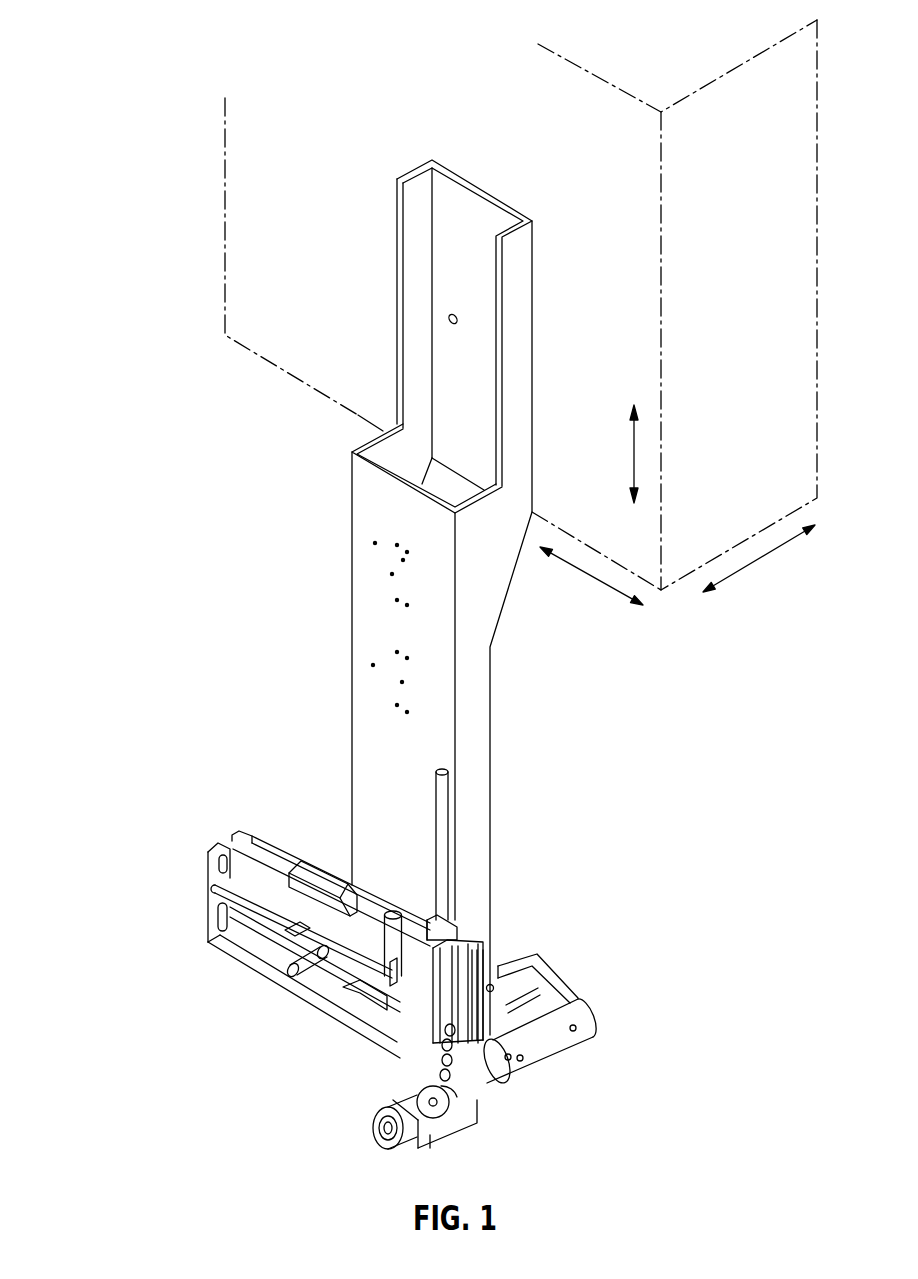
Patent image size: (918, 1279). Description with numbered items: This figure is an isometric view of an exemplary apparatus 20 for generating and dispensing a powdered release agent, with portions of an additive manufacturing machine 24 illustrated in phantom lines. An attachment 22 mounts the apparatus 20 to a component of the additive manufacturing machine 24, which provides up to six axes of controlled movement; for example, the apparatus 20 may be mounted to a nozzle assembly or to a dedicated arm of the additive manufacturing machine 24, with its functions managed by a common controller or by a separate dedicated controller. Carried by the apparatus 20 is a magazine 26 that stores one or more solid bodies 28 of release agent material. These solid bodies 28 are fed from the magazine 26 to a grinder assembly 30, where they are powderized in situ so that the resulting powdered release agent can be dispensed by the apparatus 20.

The apparatus 20 is at (170, 562).
The attachment 22 is at (480, 792).
The additive manufacturing machine 24 is at (750, 207).
The magazine 26 is at (170, 993).
The solid body 28 is at (392, 910).
The grinder assembly 30 is at (527, 1147).